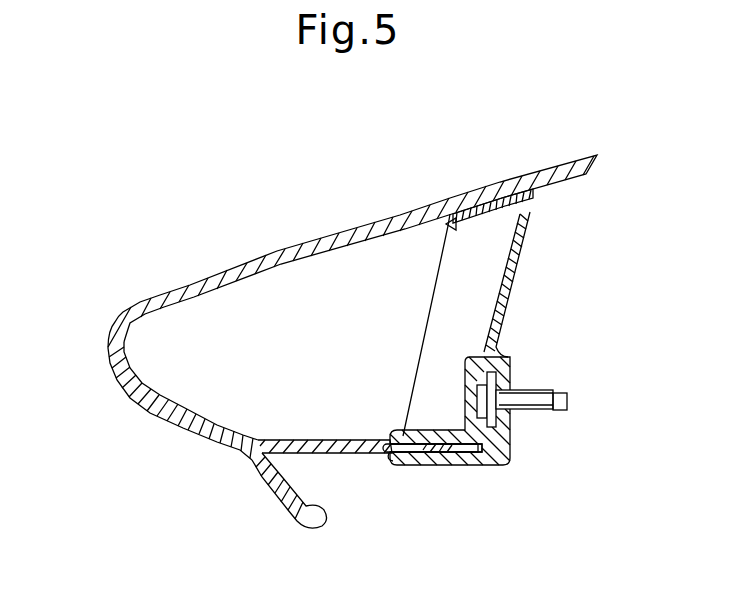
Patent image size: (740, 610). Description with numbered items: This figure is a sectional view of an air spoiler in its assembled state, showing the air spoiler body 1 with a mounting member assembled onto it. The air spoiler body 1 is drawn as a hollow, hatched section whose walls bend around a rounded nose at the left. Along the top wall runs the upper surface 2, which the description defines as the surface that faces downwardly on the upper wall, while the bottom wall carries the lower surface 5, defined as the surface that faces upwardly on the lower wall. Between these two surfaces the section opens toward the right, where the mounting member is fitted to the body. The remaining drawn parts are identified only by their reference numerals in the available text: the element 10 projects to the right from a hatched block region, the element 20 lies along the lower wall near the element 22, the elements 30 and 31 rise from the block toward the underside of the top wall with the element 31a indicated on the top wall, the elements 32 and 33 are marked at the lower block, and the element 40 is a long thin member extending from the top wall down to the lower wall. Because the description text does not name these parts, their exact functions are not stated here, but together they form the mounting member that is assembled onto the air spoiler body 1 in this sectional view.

The air spoiler body 1 is at (108, 349).
The upper surface 2 is at (280, 251).
The lower surface 5 is at (283, 507).
The bolt 10 is at (543, 403).
The lower plate 20 is at (328, 453).
The tongue piece 22 is at (393, 457).
The bracket wall 30 is at (480, 287).
The flange portion of bracket 31 is at (533, 197).
The upper surface of flange 31a is at (511, 180).
The mounting block 32 is at (477, 467).
The groove in mounting block 33 is at (438, 465).
The connecting cord 40 is at (450, 214).